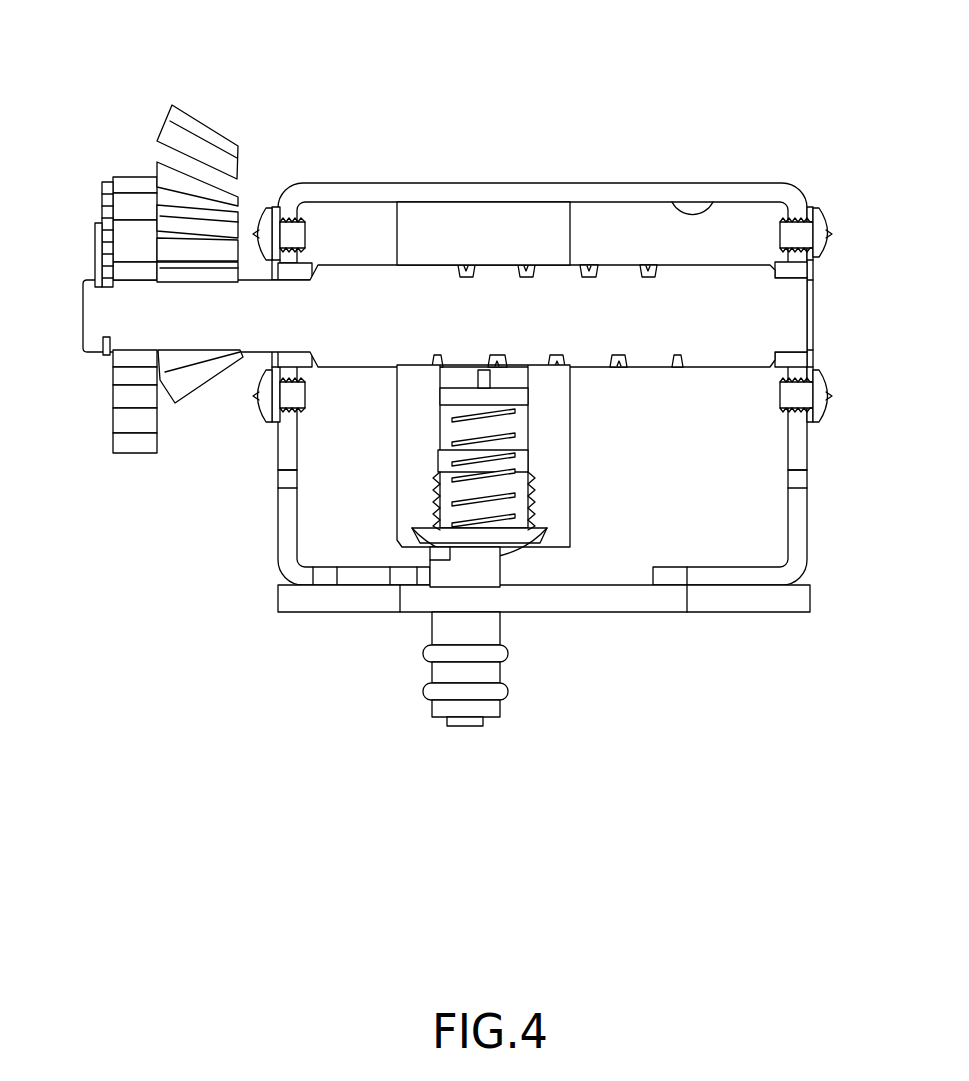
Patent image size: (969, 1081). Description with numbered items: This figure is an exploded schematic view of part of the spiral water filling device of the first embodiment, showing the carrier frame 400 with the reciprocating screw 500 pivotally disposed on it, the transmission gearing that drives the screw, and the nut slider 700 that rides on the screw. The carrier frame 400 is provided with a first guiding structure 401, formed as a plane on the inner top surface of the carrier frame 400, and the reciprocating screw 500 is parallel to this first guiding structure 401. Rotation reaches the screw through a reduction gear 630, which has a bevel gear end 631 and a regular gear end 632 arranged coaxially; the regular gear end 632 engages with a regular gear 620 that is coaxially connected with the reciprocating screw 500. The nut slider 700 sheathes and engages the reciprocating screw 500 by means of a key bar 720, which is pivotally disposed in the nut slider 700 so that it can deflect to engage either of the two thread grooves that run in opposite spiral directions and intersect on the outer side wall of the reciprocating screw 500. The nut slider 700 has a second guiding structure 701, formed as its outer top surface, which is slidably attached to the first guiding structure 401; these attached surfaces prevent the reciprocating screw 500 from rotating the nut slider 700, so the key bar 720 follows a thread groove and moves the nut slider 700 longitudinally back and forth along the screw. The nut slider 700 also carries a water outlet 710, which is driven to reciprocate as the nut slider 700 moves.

The carrier frame 400 is at (632, 182).
The first guiding structure 401 is at (713, 200).
The reciprocating screw 500 is at (782, 319).
The regular gear 620 is at (132, 273).
The reduction gear 630 is at (166, 229).
The bevel gear end 631 is at (209, 232).
The regular gear end 632 is at (132, 200).
The nut slider 700 is at (573, 533).
The second guiding structure 701 is at (462, 200).
The water outlet 710 is at (492, 630).
The key bar 720 is at (488, 378).